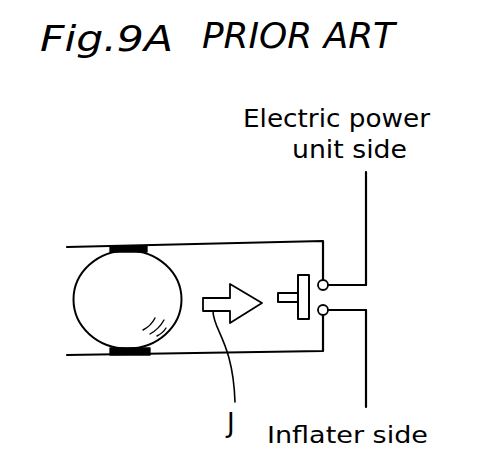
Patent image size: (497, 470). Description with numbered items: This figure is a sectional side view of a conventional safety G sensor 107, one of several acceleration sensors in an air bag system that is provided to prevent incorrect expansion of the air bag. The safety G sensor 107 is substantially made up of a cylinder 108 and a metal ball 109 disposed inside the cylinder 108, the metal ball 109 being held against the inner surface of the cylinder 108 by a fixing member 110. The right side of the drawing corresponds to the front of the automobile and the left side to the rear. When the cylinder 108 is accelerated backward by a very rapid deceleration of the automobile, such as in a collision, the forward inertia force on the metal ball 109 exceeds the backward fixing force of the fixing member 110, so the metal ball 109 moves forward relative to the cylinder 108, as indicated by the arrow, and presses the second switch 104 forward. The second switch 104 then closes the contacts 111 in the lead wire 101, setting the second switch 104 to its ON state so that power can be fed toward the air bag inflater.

The lead wire 101 is at (366, 221).
The second switch 104 is at (301, 262).
The safety G sensor 107 is at (168, 190).
The cylinder 108 is at (182, 355).
The metal ball 109 is at (96, 322).
The fixing member 110 is at (122, 245).
The contacts 111 is at (340, 294).